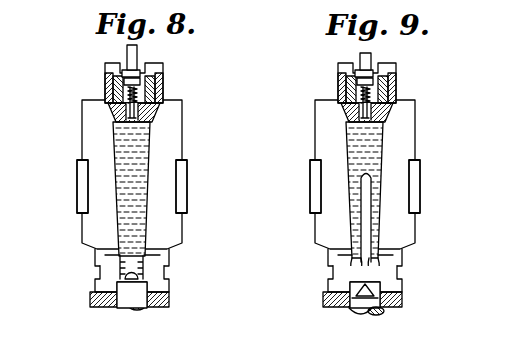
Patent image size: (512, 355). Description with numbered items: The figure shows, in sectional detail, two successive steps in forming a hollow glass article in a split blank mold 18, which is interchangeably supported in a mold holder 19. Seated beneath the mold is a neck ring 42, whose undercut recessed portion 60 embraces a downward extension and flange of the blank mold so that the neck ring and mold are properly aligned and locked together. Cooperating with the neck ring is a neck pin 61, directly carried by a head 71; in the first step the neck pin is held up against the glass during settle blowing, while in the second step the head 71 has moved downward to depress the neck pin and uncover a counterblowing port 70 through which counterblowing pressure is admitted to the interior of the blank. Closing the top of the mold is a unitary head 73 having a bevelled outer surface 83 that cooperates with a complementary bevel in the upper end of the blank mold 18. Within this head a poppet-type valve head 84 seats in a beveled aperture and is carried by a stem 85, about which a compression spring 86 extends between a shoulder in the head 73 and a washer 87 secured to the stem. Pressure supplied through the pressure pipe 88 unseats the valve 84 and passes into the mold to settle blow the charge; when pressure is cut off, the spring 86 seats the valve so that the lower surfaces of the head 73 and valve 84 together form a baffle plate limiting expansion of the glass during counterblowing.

In FIG. 8, the blank mold 18 is at (170, 127).
In FIG. 9, the blank mold 18 is at (403, 128).
In FIG. 8, the mold holder 19 is at (182, 172).
In FIG. 9, the mold holder 19 is at (412, 183).
In FIG. 8, the neck ring 42 is at (160, 265).
In FIG. 9, the neck ring 42 is at (393, 260).
In FIG. 8, the undercut recessed portion 60 is at (108, 255).
In FIG. 9, the undercut recessed portion 60 is at (338, 253).
In FIG. 8, the neck pin 61 is at (127, 273).
In FIG. 9, the neck pin 61 is at (380, 288).
In FIG. 9, the counterblowing port 70 is at (388, 305).
In FIG. 9, the head 71 is at (360, 310).
In FIG. 8, the head 73 is at (175, 74).
In FIG. 9, the head 73 is at (405, 75).
In FIG. 8, the bevelled outer surface 83 is at (112, 110).
In FIG. 8, the poppet-type valve head 84 is at (130, 124).
In FIG. 9, the poppet-type valve head 84 is at (353, 118).
In FIG. 8, the stem 85 is at (137, 72).
In FIG. 8, the compression spring 86 is at (162, 97).
In FIG. 9, the compression spring 86 is at (340, 97).
In FIG. 8, the washer 87 is at (108, 76).
In FIG. 8, the pressure pipe 88 is at (130, 52).
In FIG. 9, the pressure pipe 88 is at (360, 58).